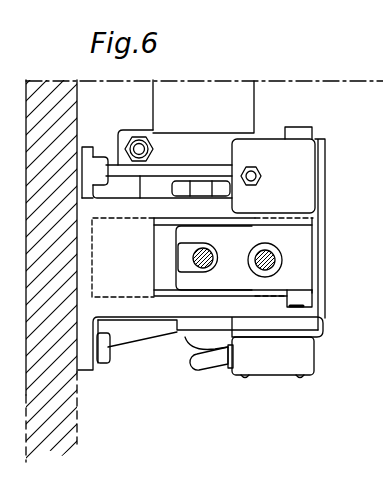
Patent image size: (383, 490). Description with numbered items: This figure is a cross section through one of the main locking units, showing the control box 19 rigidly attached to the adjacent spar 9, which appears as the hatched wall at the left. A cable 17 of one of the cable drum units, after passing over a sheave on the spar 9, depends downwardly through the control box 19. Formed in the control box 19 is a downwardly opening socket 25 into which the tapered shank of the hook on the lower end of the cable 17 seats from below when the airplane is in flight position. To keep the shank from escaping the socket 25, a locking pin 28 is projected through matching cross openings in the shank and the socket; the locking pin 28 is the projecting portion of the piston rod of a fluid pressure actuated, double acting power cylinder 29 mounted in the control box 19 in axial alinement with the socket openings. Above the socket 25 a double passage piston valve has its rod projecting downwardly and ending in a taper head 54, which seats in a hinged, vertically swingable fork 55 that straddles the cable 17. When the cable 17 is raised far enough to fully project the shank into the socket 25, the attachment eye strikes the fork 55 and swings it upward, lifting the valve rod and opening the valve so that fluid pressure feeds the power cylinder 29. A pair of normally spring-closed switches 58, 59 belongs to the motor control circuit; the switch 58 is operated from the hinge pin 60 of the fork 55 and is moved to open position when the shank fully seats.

The spar 9 is at (70, 413).
The cable 17 is at (217, 250).
The control box 19 is at (332, 227).
The socket 25 is at (154, 269).
The locking pin 28 is at (188, 345).
The power cylinder 29 is at (243, 112).
The taper head 54 is at (281, 263).
The fork 55 is at (177, 233).
The switch 58 is at (298, 188).
The switch 59 is at (203, 371).
The hinge pin 60 is at (298, 307).